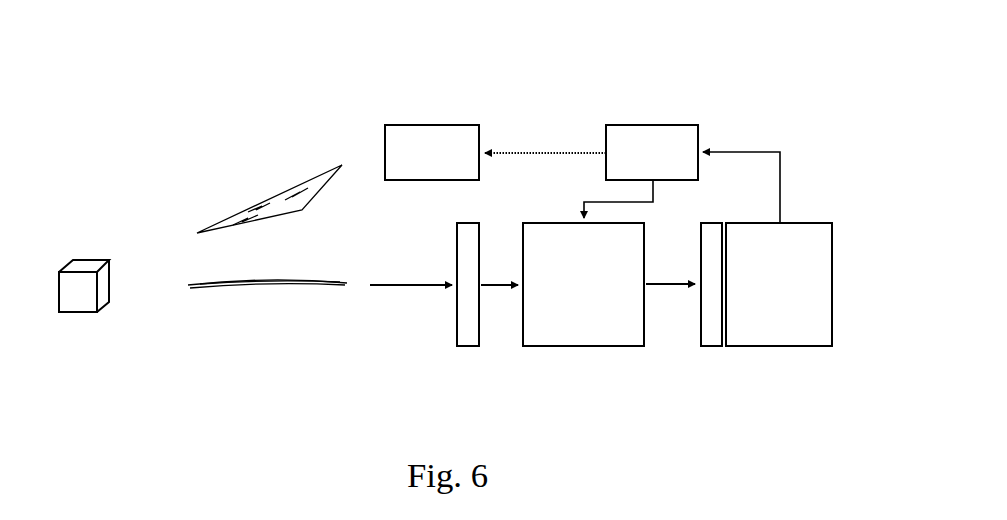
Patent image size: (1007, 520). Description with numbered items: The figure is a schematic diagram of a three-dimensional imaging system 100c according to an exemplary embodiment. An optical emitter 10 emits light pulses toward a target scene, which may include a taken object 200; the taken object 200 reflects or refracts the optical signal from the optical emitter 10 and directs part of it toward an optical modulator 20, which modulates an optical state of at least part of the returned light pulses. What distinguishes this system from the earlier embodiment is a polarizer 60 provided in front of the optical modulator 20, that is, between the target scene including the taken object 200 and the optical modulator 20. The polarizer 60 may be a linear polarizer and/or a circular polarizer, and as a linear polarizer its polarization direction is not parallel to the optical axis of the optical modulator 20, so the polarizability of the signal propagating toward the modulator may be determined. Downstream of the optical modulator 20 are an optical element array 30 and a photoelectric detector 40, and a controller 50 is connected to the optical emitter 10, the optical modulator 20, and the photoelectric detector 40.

The three-dimensional imaging system 100c is at (858, 67).
The taken object 200 is at (87, 240).
The optical emitter 10 is at (432, 121).
The controller 50 is at (653, 120).
The polarizer 60 is at (469, 351).
The optical modulator 20 is at (587, 351).
The optical element array 30 is at (710, 351).
The photoelectric detector 40 is at (780, 351).